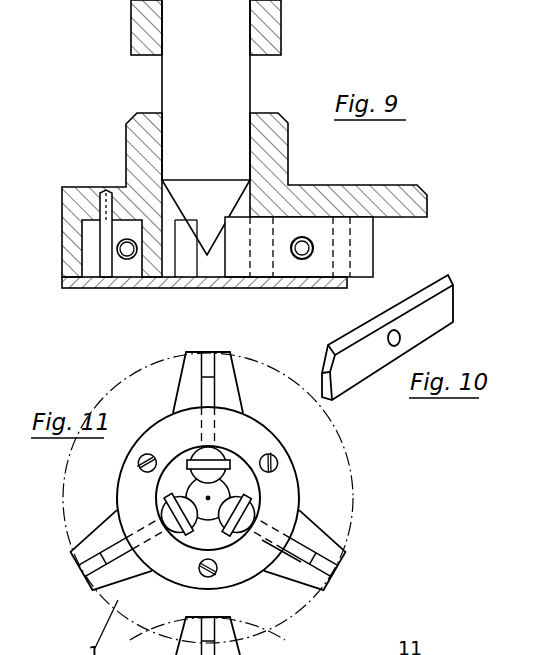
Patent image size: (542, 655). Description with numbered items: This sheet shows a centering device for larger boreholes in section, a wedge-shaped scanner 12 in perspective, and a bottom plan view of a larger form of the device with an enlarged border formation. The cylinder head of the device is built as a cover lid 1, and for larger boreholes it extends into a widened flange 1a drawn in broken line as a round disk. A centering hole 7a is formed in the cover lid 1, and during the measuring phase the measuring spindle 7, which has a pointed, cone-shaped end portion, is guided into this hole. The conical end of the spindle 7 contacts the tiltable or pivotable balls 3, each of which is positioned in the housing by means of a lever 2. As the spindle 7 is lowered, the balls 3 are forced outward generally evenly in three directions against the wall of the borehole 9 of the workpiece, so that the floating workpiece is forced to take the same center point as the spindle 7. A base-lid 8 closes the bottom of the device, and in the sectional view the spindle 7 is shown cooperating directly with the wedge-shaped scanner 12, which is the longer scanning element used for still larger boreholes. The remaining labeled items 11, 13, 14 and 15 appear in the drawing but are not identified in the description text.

In FIG. 9, the cover lid 1 is at (147, 158).
In FIG. 11, the cover lid 1 is at (170, 435).
In FIG. 11, the widened flange 1a is at (123, 570).
In FIG. 11, the lever 2 is at (230, 523).
In FIG. 11, the tiltable balls 3 is at (244, 516).
In FIG. 9, the measuring spindle 7 is at (182, 93).
In FIG. 11, the measuring spindle 7 is at (212, 493).
In FIG. 9, the centering hole 7a is at (285, 180).
In FIG. 9, the base-lid 8 is at (73, 290).
In FIG. 11, the borehole 9 is at (158, 483).
In FIG. 11, the pitch circle 11 is at (353, 493).
In FIG. 11, the wedge-shaped scanner 12 is at (300, 553).
In FIG. 9, the blade / key 13 is at (360, 247).
In FIG. 10, the blade / key 13 is at (387, 320).
In FIG. 9, the slide block 14 is at (228, 228).
In FIG. 9, the locating pin 15 is at (127, 251).